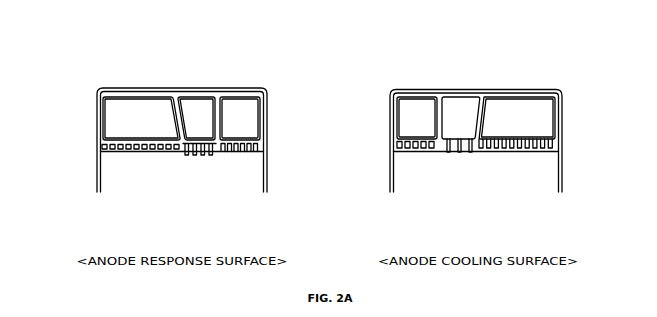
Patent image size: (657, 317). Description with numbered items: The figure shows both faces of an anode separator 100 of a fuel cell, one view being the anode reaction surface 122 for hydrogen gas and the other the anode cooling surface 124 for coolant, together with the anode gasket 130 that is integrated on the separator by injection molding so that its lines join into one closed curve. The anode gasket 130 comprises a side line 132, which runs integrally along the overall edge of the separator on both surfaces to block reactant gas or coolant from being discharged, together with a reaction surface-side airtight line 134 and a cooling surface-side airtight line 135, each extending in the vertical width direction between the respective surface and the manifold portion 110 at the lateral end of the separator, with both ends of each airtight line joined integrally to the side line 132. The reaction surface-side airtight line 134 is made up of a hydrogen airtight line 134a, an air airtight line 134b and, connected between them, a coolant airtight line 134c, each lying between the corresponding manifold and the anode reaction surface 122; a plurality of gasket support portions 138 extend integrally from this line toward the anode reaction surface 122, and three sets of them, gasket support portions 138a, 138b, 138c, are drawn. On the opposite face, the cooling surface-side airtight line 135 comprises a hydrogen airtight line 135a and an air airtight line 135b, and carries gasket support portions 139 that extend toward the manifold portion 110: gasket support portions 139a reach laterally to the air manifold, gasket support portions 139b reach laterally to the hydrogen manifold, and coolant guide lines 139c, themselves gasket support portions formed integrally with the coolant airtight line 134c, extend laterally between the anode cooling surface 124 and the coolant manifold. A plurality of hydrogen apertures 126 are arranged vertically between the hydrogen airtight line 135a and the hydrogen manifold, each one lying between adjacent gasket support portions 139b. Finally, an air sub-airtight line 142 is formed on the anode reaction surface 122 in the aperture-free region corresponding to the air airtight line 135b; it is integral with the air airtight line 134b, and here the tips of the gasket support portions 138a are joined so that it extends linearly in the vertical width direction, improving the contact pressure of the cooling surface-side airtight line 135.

The anode separator 100 is at (270, 83).
The manifold portion 110 is at (253, 44).
The anode reaction surface 122 is at (133, 177).
The anode cooling surface 124 is at (543, 180).
The hydrogen apertures 126 is at (263, 147).
The anode gasket 130 is at (91, 147).
The side line 132 is at (100, 175).
The reaction surface-side airtight line 134 is at (183, 160).
The reaction surface-side hydrogen airtight line 134a is at (242, 138).
The reaction surface-side air airtight line 134b is at (117, 131).
The reaction surface-side coolant airtight line 134c is at (207, 153).
The cooling surface-side airtight line 135 is at (464, 156).
The cooling surface-side hydrogen airtight line 135a is at (412, 150).
The cooling surface-side air airtight line 135b is at (492, 150).
The gasket support portions 138 is at (196, 193).
The gasket support portions 138a is at (123, 148).
The gasket support portions 138b is at (240, 152).
The gasket support portions 138c is at (193, 153).
The gasket support portions 139 is at (463, 172).
The gasket support portions 139a is at (535, 140).
The gasket support portions 139b is at (407, 140).
The coolant guide lines 139c is at (452, 150).
The air sub-airtight line 142 is at (152, 153).